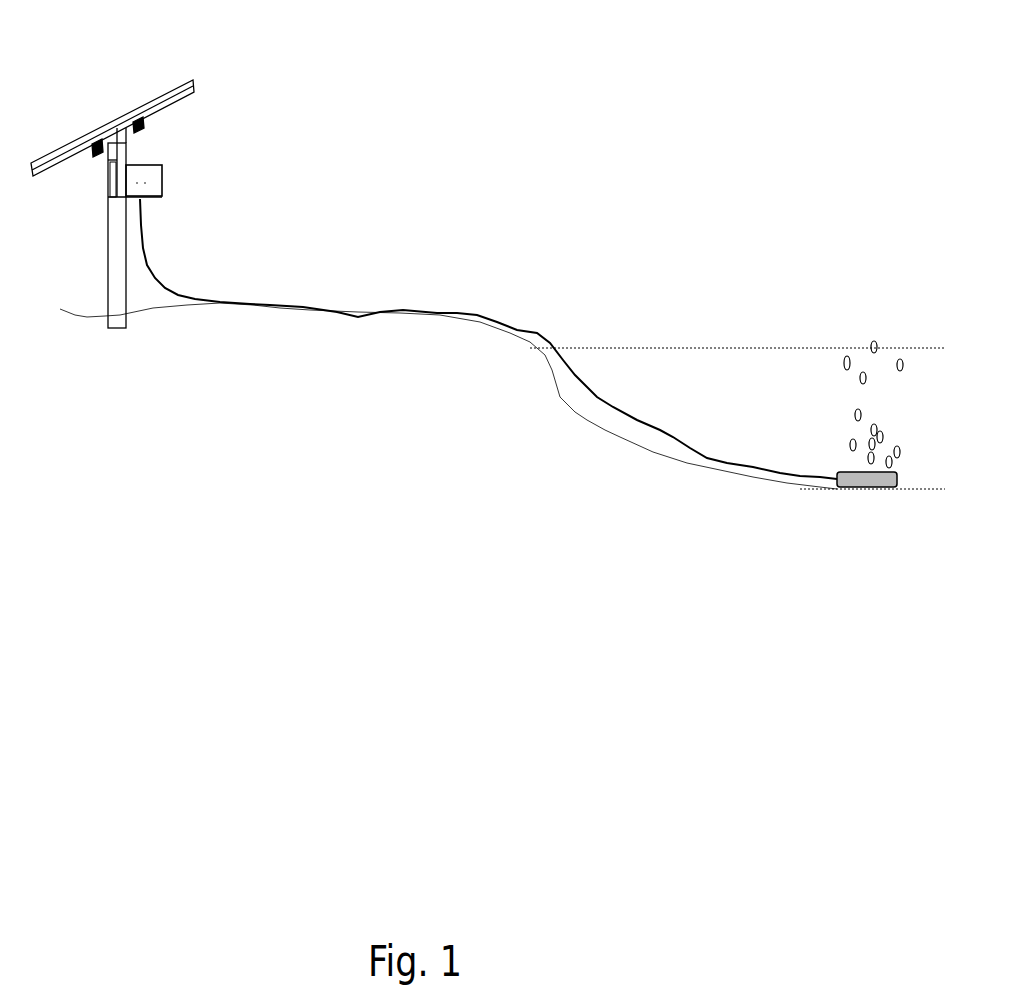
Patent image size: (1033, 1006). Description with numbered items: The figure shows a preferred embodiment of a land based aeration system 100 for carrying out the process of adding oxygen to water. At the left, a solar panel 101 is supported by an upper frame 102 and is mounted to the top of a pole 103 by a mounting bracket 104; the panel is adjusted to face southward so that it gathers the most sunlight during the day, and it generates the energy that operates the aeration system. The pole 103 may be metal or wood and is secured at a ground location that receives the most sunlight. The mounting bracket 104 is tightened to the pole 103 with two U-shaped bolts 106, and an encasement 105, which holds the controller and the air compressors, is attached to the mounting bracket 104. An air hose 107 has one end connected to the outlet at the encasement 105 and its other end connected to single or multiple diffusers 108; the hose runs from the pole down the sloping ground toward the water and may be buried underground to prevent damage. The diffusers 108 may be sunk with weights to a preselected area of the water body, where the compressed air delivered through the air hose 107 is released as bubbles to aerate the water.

The land based aeration system 100 is at (395, 95).
The solar panel 101 is at (92, 137).
The upper frame 102 is at (146, 127).
The pole 103 is at (108, 275).
The mounting bracket 104 is at (128, 148).
The encasement 105 is at (162, 195).
The U-shaped bolts 106 is at (112, 162).
The air hose 107 is at (457, 312).
The diffusers 108 is at (869, 490).